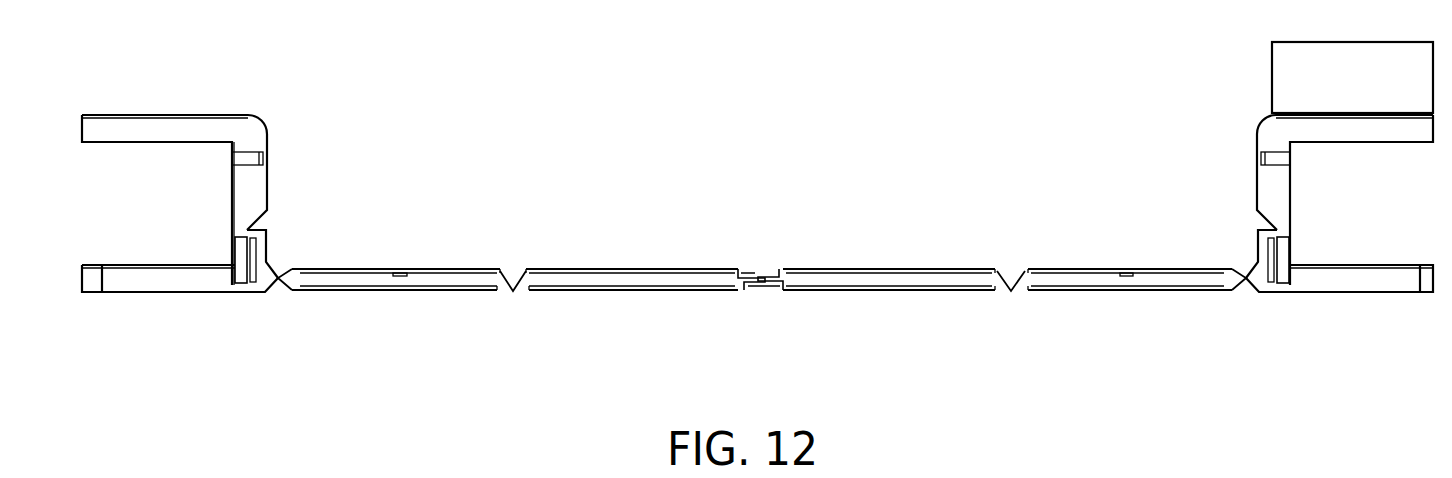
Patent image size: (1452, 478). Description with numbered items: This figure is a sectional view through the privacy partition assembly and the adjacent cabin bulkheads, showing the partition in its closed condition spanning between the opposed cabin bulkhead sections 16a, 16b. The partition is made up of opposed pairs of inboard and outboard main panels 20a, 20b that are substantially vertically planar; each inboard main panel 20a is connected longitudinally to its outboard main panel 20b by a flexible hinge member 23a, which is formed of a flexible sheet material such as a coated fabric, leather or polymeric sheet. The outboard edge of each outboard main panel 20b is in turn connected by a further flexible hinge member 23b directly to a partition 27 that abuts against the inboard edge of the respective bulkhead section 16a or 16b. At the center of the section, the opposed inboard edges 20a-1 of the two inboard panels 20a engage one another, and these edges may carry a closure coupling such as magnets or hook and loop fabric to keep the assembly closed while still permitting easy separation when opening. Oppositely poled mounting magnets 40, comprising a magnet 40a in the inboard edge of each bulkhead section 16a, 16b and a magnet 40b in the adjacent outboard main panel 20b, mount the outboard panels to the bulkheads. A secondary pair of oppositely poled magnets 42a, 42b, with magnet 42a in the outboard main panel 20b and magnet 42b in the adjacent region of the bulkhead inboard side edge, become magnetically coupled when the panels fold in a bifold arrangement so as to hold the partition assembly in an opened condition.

The cabin bulkhead section 16a is at (1365, 282).
The cabin bulkhead section 16b is at (121, 282).
The inboard main panel 20a is at (630, 281).
The inboard edge 20a-1 is at (762, 272).
The outboard main panel 20b is at (432, 284).
The flexible hinge member 23a is at (513, 292).
The flexible hinge member 23b is at (278, 270).
The partition 27 is at (245, 204).
The magnet pair 40 is at (762, 270).
The mounting magnet 40a is at (243, 266).
The mounting magnet 40b is at (259, 291).
The magnet 42a is at (1268, 157).
The magnet 42b is at (399, 271).